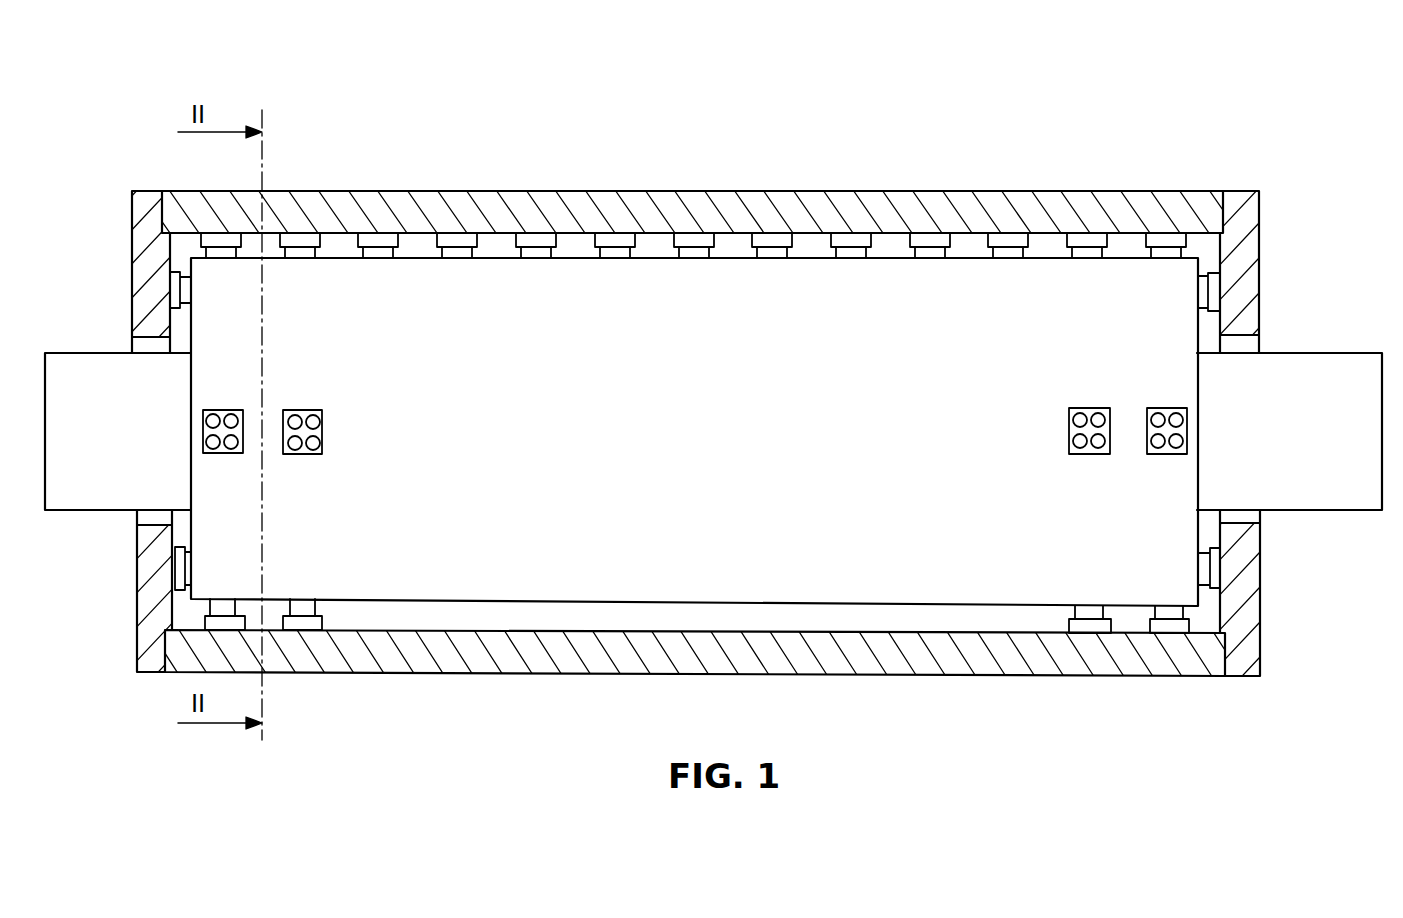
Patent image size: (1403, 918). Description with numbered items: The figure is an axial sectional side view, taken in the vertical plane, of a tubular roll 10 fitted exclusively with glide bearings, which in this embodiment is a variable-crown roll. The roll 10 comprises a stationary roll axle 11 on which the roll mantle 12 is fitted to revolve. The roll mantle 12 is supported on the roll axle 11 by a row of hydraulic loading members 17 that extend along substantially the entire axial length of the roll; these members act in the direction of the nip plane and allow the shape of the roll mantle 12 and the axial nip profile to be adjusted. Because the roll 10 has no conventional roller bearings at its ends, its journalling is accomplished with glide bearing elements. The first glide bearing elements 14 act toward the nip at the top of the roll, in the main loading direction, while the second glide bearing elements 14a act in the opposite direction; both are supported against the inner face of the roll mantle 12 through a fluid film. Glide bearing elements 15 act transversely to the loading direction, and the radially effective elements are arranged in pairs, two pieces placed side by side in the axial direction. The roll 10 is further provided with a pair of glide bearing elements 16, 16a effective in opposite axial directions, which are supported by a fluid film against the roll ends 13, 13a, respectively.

The roll 10 is at (906, 110).
The stationary roll axle 11 is at (784, 320).
The roll mantle 12 is at (691, 206).
The roll end 13 is at (143, 248).
The roll end 13a is at (1238, 233).
The first glide bearing elements 14 is at (293, 248).
The second glide bearing elements 14a is at (299, 623).
The glide bearing elements 15 is at (305, 412).
The glide bearing element 16 is at (172, 290).
The glide bearing element 16a is at (1224, 293).
The hydraulic loading members 17 is at (618, 243).